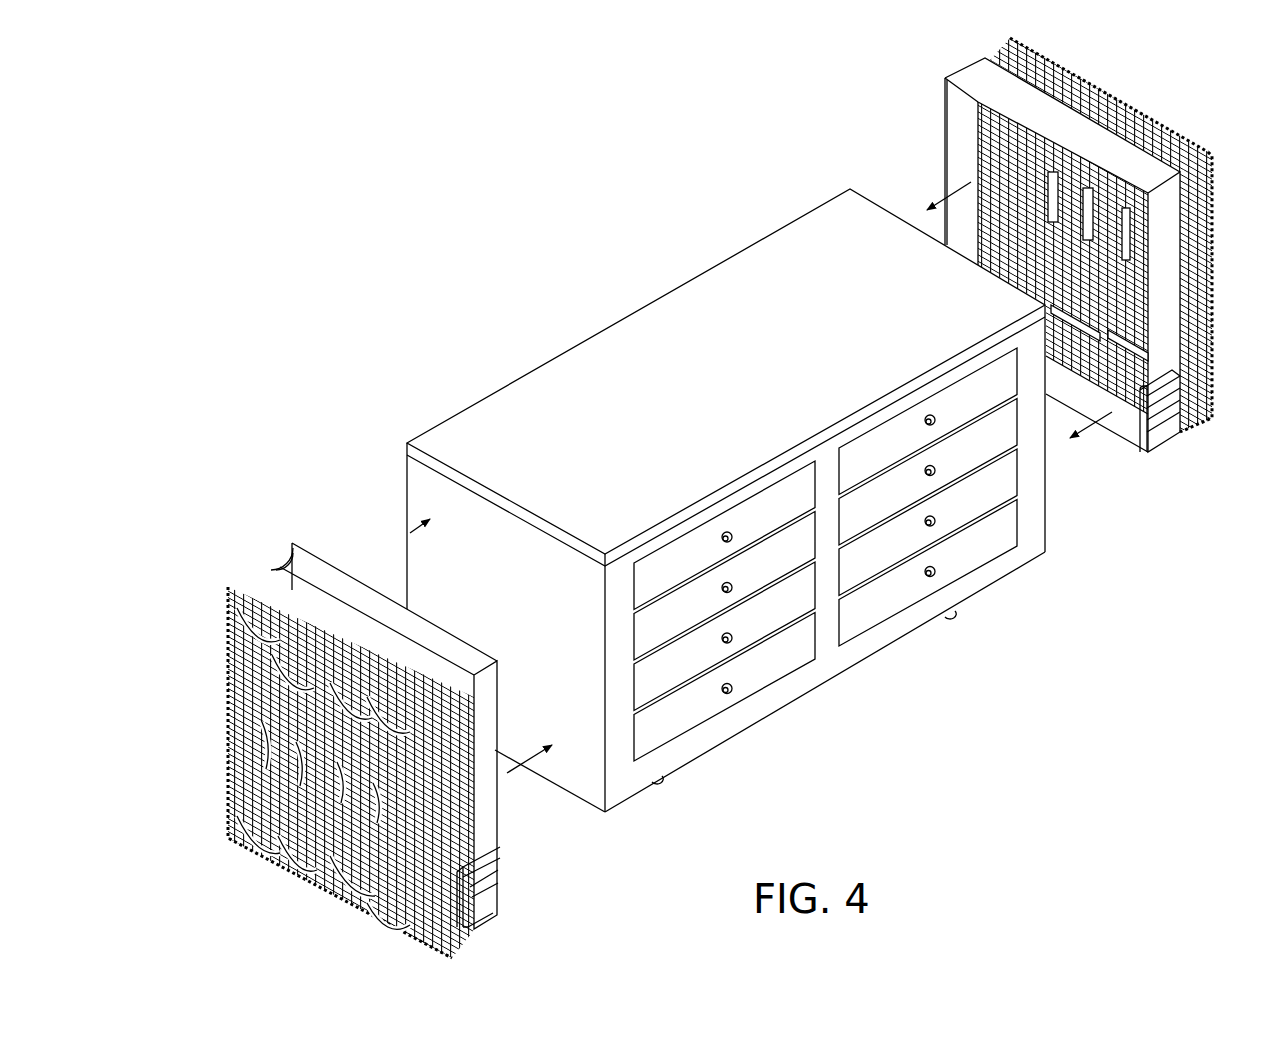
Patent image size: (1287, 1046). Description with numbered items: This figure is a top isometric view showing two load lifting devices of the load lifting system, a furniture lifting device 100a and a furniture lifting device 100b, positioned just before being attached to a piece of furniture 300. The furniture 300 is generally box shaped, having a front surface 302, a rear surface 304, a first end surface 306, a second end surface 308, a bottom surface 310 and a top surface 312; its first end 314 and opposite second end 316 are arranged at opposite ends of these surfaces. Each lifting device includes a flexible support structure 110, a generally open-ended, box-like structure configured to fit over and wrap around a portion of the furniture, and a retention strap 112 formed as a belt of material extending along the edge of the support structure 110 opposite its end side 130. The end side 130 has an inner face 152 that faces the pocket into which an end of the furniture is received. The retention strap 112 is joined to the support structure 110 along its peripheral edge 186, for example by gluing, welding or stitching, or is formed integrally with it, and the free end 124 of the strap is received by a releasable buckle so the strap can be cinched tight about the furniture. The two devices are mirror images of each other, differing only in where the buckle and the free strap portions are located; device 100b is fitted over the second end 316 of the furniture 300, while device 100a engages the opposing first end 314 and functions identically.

The furniture lifting device 100a is at (343, 721).
The furniture lifting device 100b is at (1081, 275).
The support structure 110 is at (1079, 248).
The retention strap 112 is at (1038, 108).
The free end 124 is at (1172, 443).
The end side 130 is at (1126, 231).
The inner face 152 is at (976, 174).
The peripheral edge 186 is at (287, 553).
The furniture 300 is at (726, 524).
The front side or surface 302 is at (838, 665).
The rear side or surface 304 is at (478, 385).
The first end side or surface 306 is at (587, 777).
The second end side or surface 308 is at (1054, 528).
The bottom side or surface 310 is at (727, 748).
The top side or surface 312 is at (785, 253).
The first end 314 is at (407, 426).
The second end 316 is at (1052, 572).